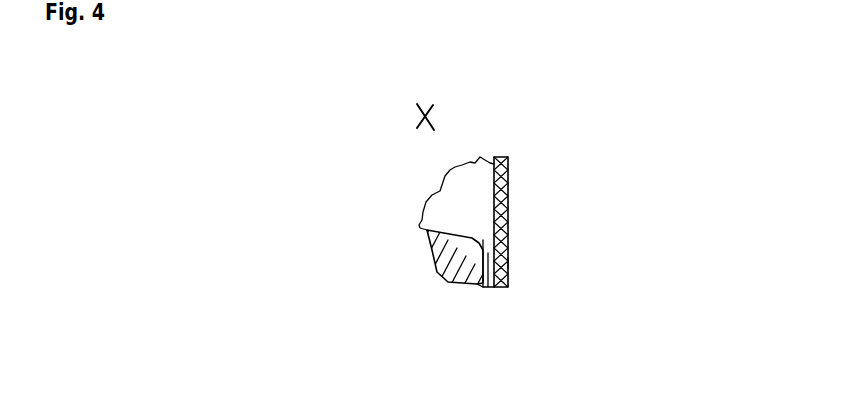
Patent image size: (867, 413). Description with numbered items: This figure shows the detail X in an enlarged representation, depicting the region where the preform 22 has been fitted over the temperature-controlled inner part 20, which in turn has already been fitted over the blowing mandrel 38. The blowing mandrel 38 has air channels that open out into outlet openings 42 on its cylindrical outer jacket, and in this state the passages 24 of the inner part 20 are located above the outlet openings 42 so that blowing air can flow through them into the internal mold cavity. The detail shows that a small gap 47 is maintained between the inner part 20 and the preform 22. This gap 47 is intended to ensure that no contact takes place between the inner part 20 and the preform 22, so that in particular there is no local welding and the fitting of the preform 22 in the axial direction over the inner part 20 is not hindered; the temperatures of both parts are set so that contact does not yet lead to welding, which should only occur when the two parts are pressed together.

The preform 22 is at (508, 168).
The outlet openings 42 is at (455, 188).
The blowing mandrel 38 is at (450, 257).
The passages 24 is at (483, 240).
The gap 47 is at (508, 263).
The inner part 20 is at (478, 286).